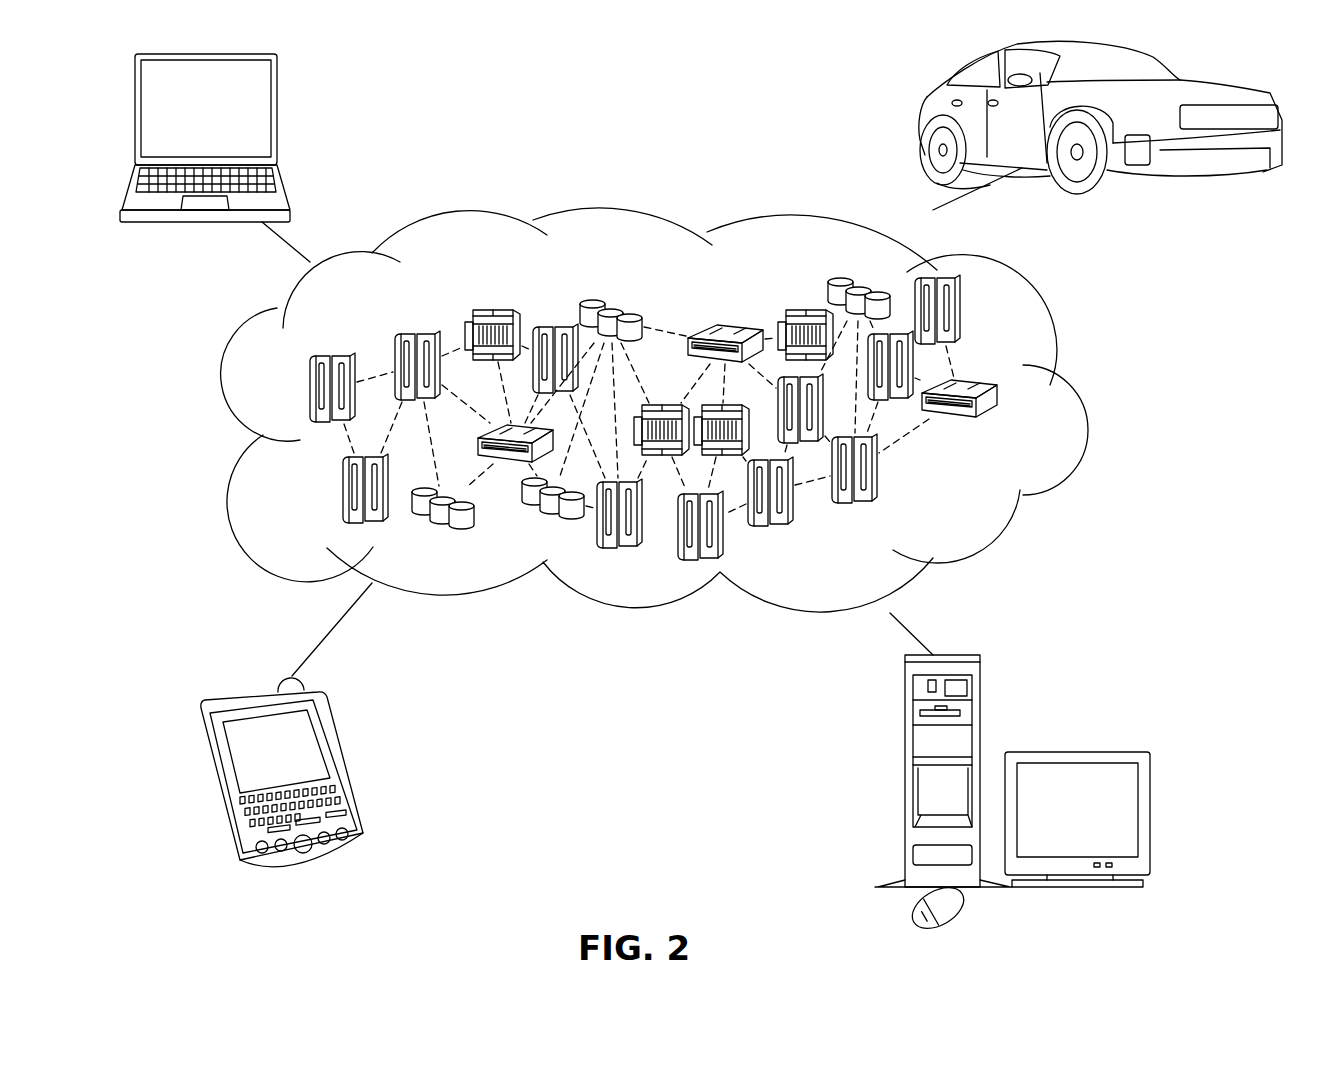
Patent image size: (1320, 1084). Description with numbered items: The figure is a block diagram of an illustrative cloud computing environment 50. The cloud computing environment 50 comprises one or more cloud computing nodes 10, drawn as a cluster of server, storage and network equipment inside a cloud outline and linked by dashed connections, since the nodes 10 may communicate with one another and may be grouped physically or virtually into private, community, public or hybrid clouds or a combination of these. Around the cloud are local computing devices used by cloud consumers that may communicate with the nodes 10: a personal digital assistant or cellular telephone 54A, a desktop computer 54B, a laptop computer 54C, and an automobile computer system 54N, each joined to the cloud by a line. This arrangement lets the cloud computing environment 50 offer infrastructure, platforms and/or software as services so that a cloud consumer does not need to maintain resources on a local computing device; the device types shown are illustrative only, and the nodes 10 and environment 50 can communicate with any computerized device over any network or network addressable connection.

The cloud computing node 10 is at (987, 506).
The cloud computing environment 50 is at (1075, 400).
The personal digital assistant or cellular telephone 54A is at (330, 730).
The desktop computer 54B is at (902, 717).
The laptop computer 54C is at (277, 92).
The automobile computer system 54N is at (920, 108).